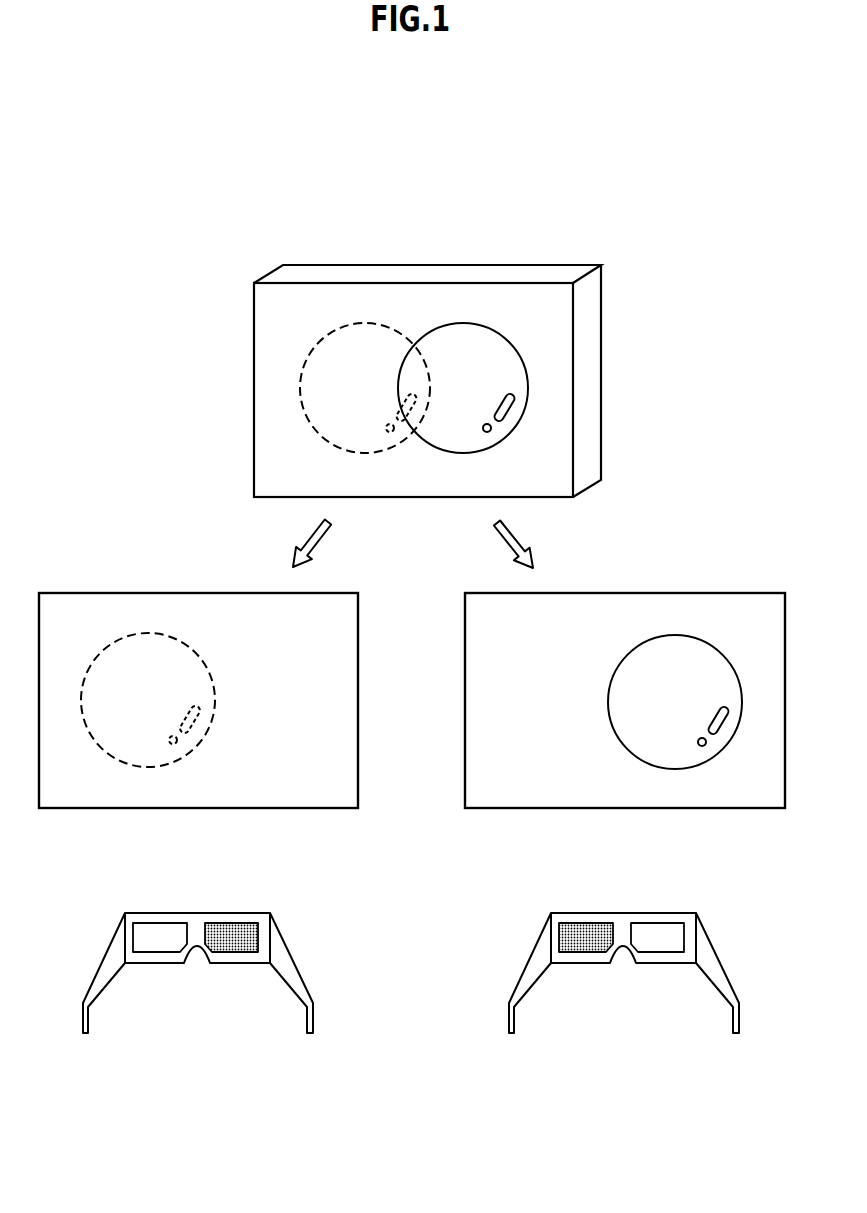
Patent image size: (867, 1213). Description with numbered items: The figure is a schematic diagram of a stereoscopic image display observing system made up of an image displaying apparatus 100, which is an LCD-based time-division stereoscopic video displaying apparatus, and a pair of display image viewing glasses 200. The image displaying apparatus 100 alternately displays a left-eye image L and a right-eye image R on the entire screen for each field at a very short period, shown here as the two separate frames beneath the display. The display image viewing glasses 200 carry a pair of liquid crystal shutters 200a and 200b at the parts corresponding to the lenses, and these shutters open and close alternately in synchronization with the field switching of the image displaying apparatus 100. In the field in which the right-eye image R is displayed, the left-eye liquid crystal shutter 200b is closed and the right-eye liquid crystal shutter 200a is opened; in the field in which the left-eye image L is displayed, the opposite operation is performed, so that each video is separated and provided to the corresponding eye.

The image displaying apparatus 100 is at (593, 322).
The display image viewing glasses 200 is at (268, 895).
The right-eye liquid crystal shutter 200a is at (235, 943).
The left-eye liquid crystal shutter 200b is at (158, 940).
The left-eye image L is at (147, 600).
The right-eye image R is at (678, 600).